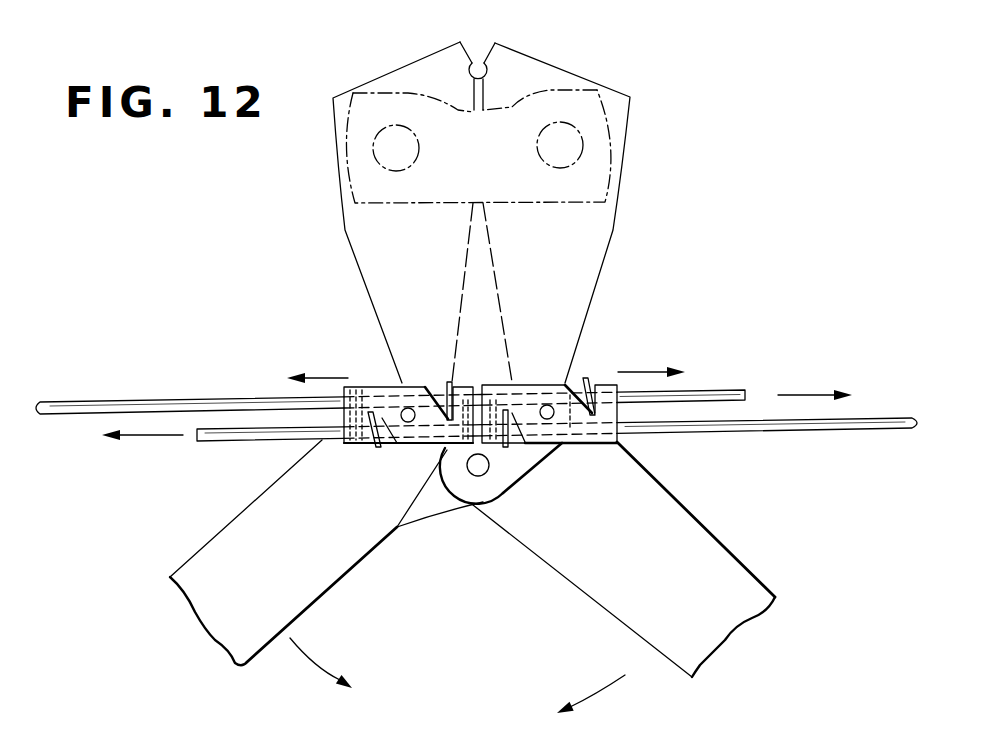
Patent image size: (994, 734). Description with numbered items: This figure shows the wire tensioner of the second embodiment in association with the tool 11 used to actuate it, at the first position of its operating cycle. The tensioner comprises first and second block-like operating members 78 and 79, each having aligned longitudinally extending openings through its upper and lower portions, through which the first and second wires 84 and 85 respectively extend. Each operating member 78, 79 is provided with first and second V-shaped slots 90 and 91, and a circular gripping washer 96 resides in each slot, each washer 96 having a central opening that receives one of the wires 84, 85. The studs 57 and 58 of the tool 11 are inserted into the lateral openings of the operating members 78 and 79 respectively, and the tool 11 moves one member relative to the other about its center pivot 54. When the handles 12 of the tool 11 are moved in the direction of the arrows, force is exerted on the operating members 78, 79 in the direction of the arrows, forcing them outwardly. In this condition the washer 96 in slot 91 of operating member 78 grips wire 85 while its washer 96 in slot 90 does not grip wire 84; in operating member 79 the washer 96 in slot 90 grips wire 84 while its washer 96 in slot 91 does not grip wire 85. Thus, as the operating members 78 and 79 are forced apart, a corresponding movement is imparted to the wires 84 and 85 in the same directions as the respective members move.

The tool 11 is at (324, 239).
The handles 12 is at (273, 595).
The center pivot 54 is at (475, 474).
The stud 57 is at (549, 418).
The stud 58 is at (407, 423).
The first operating member 78 is at (525, 383).
The second operating member 79 is at (372, 386).
The first wire 84 is at (688, 430).
The second wire 85 is at (218, 400).
The first V-shaped slot 90 is at (390, 448).
The second V-shaped slot 91 is at (437, 387).
The gripping washer 96 is at (370, 448).